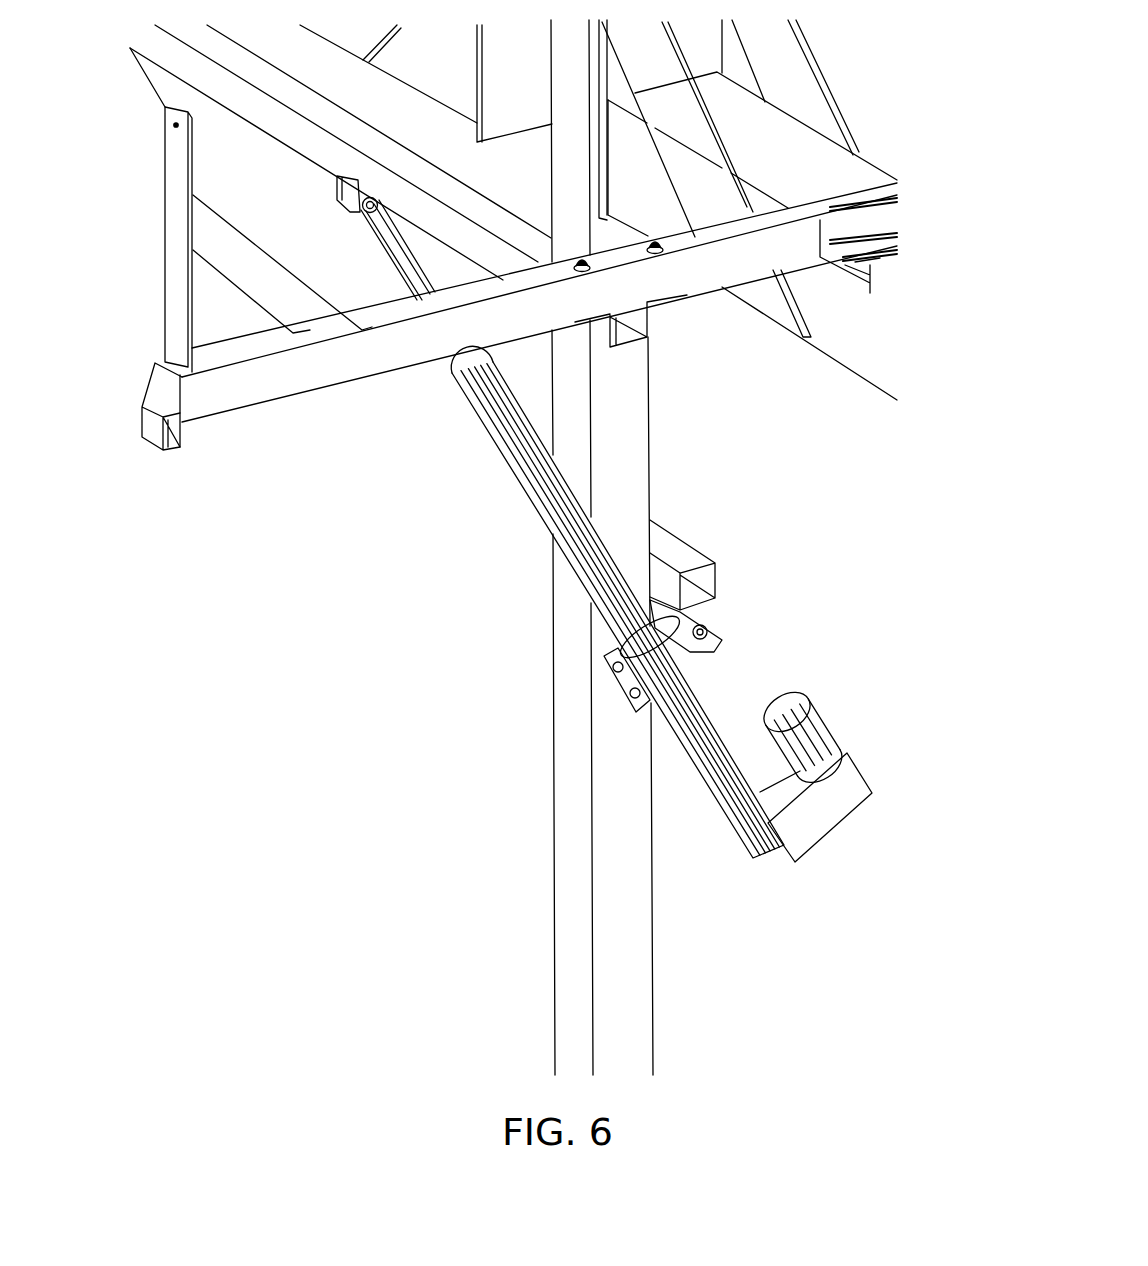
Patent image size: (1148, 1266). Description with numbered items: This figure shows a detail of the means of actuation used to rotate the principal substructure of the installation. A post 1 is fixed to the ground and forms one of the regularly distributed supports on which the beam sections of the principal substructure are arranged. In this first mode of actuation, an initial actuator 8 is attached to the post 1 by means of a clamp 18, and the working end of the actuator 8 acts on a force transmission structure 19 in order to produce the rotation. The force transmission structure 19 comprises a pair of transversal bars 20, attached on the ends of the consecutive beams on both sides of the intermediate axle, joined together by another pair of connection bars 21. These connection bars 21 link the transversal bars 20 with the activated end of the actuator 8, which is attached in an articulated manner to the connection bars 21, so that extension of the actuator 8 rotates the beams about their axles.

The post 1 is at (570, 760).
The initial actuator 8 is at (728, 857).
The clamp 18 is at (645, 672).
The force transmission structure 19 is at (353, 440).
The transversal bars 20 is at (683, 270).
The connection bars 21 is at (218, 70).